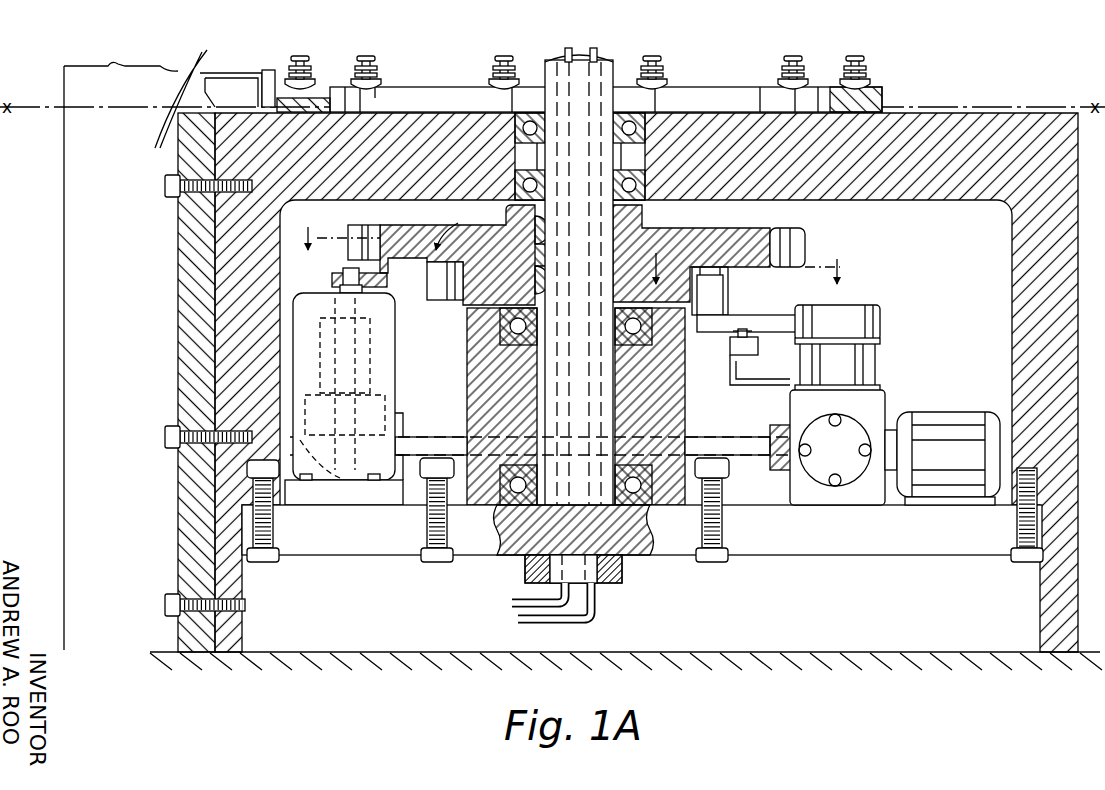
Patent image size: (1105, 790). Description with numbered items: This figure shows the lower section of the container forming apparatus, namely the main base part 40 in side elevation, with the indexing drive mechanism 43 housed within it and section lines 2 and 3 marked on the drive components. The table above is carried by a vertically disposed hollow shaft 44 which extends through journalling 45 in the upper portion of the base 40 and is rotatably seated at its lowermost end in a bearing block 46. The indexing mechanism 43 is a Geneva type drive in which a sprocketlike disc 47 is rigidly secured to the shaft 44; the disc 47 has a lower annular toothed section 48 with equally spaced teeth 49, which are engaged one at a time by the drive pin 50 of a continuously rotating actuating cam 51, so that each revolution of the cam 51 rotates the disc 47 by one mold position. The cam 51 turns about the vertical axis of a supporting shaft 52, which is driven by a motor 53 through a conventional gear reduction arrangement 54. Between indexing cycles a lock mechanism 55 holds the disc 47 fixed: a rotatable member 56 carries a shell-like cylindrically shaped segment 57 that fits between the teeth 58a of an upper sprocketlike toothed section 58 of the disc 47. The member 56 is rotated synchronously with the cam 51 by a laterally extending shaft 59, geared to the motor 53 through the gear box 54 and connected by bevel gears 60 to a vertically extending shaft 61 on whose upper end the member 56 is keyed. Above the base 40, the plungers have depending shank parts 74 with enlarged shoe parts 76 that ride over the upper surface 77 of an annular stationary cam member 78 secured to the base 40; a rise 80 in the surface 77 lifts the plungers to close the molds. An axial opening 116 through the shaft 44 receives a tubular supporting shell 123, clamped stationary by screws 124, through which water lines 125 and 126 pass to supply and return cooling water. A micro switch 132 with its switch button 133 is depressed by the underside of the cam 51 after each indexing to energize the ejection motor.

The main base part 40 is at (1010, 112).
The indexing drive mechanism 43 is at (818, 232).
The hollow shaft 44 is at (600, 149).
The journalling 45 is at (526, 135).
The bearing block 46 is at (488, 362).
The sprocketlike disc 47 is at (722, 226).
The lower annular toothed section 48 is at (668, 306).
The teeth 49 is at (440, 300).
The drive pin 50 is at (724, 312).
The actuating cam 51 is at (868, 323).
The supporting shaft 52 is at (858, 363).
The motor 53 is at (948, 422).
The gear reduction arrangement 54 is at (800, 398).
The lock mechanism 55 is at (336, 275).
The rotatable member 56 is at (345, 286).
The shell-like cylindrically shaped segment 57 is at (392, 236).
The upper sprocketlike toothed section 58 is at (414, 262).
The teeth 58a is at (365, 228).
The laterally extending shaft 59 is at (707, 446).
The bevel gears 60 is at (318, 406).
The vertically extending shaft 61 is at (330, 332).
The shank part 74 is at (378, 60).
The shoe part 76 is at (318, 76).
The upper surface 77 is at (460, 86).
The annular stationary cam member 78 is at (428, 92).
The rise 80 is at (372, 93).
The axial opening 116 is at (562, 385).
The tubular supporting shell 123 is at (588, 548).
The screws 124 is at (527, 567).
The water line 125 is at (549, 620).
The water line 126 is at (527, 603).
The micro switch 132 is at (738, 354).
The switch button 133 is at (733, 338).
The section line 2- 2 is at (380, 224).
The section line 3- 3 is at (746, 257).